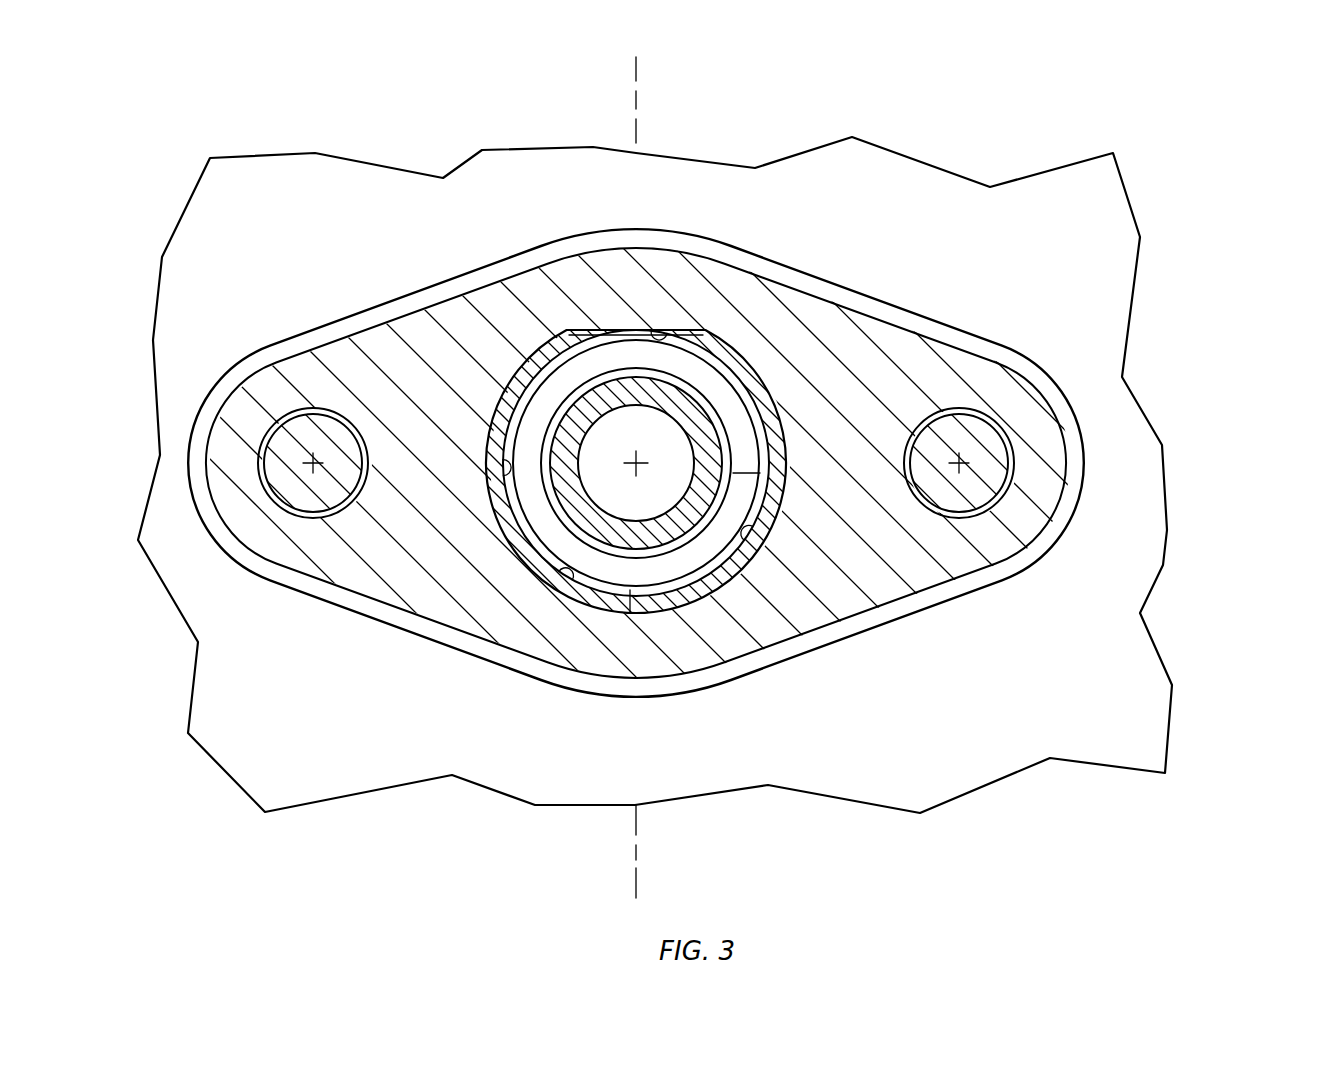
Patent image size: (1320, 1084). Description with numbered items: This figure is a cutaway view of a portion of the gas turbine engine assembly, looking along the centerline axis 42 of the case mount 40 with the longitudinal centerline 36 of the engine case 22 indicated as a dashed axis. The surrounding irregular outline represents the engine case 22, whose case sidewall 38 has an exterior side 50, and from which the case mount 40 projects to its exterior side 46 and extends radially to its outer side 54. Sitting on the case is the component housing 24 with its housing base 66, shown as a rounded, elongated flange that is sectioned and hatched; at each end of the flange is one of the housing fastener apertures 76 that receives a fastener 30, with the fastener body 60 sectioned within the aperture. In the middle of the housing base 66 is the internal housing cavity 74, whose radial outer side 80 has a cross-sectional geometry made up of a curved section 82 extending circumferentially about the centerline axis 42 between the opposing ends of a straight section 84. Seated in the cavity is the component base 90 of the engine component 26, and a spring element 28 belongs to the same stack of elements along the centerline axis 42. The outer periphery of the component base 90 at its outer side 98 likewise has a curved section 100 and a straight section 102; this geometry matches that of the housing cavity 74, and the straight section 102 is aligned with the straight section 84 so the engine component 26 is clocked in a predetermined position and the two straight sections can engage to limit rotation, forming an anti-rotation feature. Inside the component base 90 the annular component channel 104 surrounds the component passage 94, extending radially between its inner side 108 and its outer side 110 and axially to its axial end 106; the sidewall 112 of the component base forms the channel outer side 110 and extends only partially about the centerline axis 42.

The engine case 22 is at (705, 475).
The component housing 24 is at (648, 451).
The engine component 26 is at (662, 487).
The spring element 28 is at (605, 463).
The fasteners 30 is at (648, 432).
The longitudinal centerline 36 is at (643, 67).
The case sidewall 38 is at (698, 475).
The case mount 40 is at (636, 446).
The centerline axis 42 is at (640, 470).
The exterior side of the case mount 46 is at (648, 451).
The exterior side of the case sidewall 50 is at (1165, 695).
The outer side of the case mount 54 is at (636, 451).
The fastener 60 is at (328, 468).
The housing base 66 is at (648, 451).
The housing cavity 74 is at (661, 487).
The housing fastener apertures 76 is at (649, 432).
The radial outer side of the housing cavity 80 is at (580, 493).
The curved section 82 is at (620, 493).
The straight section 84 is at (651, 330).
The component base 90 is at (685, 487).
The component passage 94 is at (624, 443).
The outer side of the component base 98 is at (636, 447).
The curved section 100 is at (636, 487).
The straight section 102 is at (613, 333).
The component channel 104 is at (506, 506).
The axial end of the component channel 106 is at (636, 467).
The inner side of the component channel 108 is at (549, 434).
The outer side of the component channel 110 is at (511, 474).
The sidewall 112 is at (740, 365).